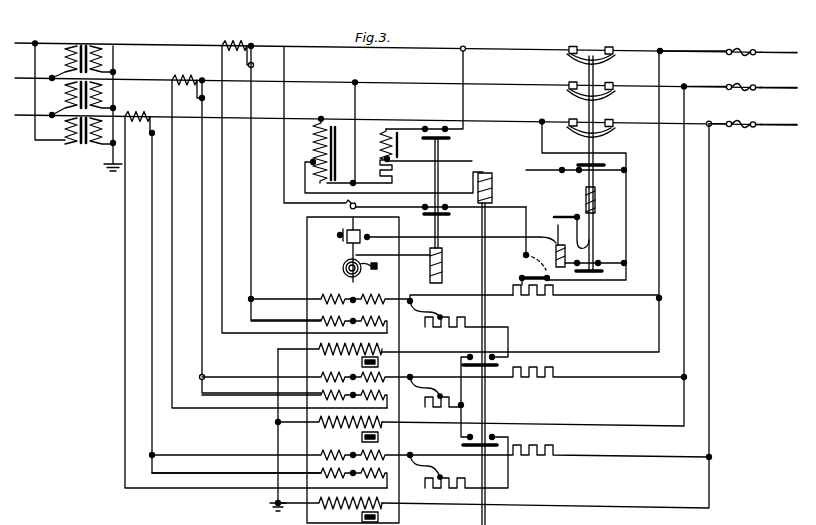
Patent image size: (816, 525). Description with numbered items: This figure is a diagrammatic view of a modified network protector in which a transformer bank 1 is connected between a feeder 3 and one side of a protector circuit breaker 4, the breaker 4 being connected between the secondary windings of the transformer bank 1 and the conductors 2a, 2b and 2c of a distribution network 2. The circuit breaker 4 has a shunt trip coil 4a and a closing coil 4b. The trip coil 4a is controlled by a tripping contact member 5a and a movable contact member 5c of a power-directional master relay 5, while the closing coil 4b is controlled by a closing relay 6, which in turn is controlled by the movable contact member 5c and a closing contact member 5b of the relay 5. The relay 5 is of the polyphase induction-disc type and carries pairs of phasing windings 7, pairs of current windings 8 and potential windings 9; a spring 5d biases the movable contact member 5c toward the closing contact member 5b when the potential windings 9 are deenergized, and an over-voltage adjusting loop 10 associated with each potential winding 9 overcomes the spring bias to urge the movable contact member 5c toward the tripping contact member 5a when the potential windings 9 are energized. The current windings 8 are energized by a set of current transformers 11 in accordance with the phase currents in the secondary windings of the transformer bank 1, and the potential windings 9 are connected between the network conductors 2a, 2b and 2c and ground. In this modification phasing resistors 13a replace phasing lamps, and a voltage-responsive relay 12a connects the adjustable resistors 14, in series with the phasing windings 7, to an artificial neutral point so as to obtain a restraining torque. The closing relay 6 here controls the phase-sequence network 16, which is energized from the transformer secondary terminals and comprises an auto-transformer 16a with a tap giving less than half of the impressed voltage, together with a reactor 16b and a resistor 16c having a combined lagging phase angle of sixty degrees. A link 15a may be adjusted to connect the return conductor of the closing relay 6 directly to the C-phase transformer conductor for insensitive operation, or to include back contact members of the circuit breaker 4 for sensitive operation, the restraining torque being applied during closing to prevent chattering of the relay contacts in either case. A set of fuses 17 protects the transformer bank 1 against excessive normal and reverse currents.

The transformer bank 1 is at (92, 36).
The distribution network 2 is at (790, 50).
The network conductor 2a is at (697, 50).
The network conductor 2b is at (708, 84).
The network conductor 2c is at (706, 121).
The feeder 3 is at (26, 36).
The protector circuit breaker 4 is at (593, 40).
The shunt trip coil 4a is at (545, 240).
The closing coil 4b is at (595, 208).
The power-directional master relay 5 is at (295, 255).
The tripping contact member 5a is at (368, 237).
The closing contact member 5b is at (339, 235).
The movable contact member 5c is at (348, 245).
The spring 5d is at (343, 270).
The closing relay 6 is at (460, 265).
The phasing windings 7 is at (355, 298).
The current windings 8 is at (365, 318).
The potential winding 9 is at (322, 346).
The over-voltage adjusting loop 10 is at (378, 362).
The current transformers 11 is at (214, 36).
The voltage-responsive relay 12a is at (486, 240).
The phasing resistors 13a is at (553, 302).
The adjustable resistors 14 is at (447, 315).
The link 15a is at (526, 255).
The phase-sequence network 16 is at (384, 119).
The auto-transformer 16a is at (313, 145).
The reactor 16b is at (372, 142).
The resistor 16c is at (392, 173).
The fuses 17 is at (711, 79).